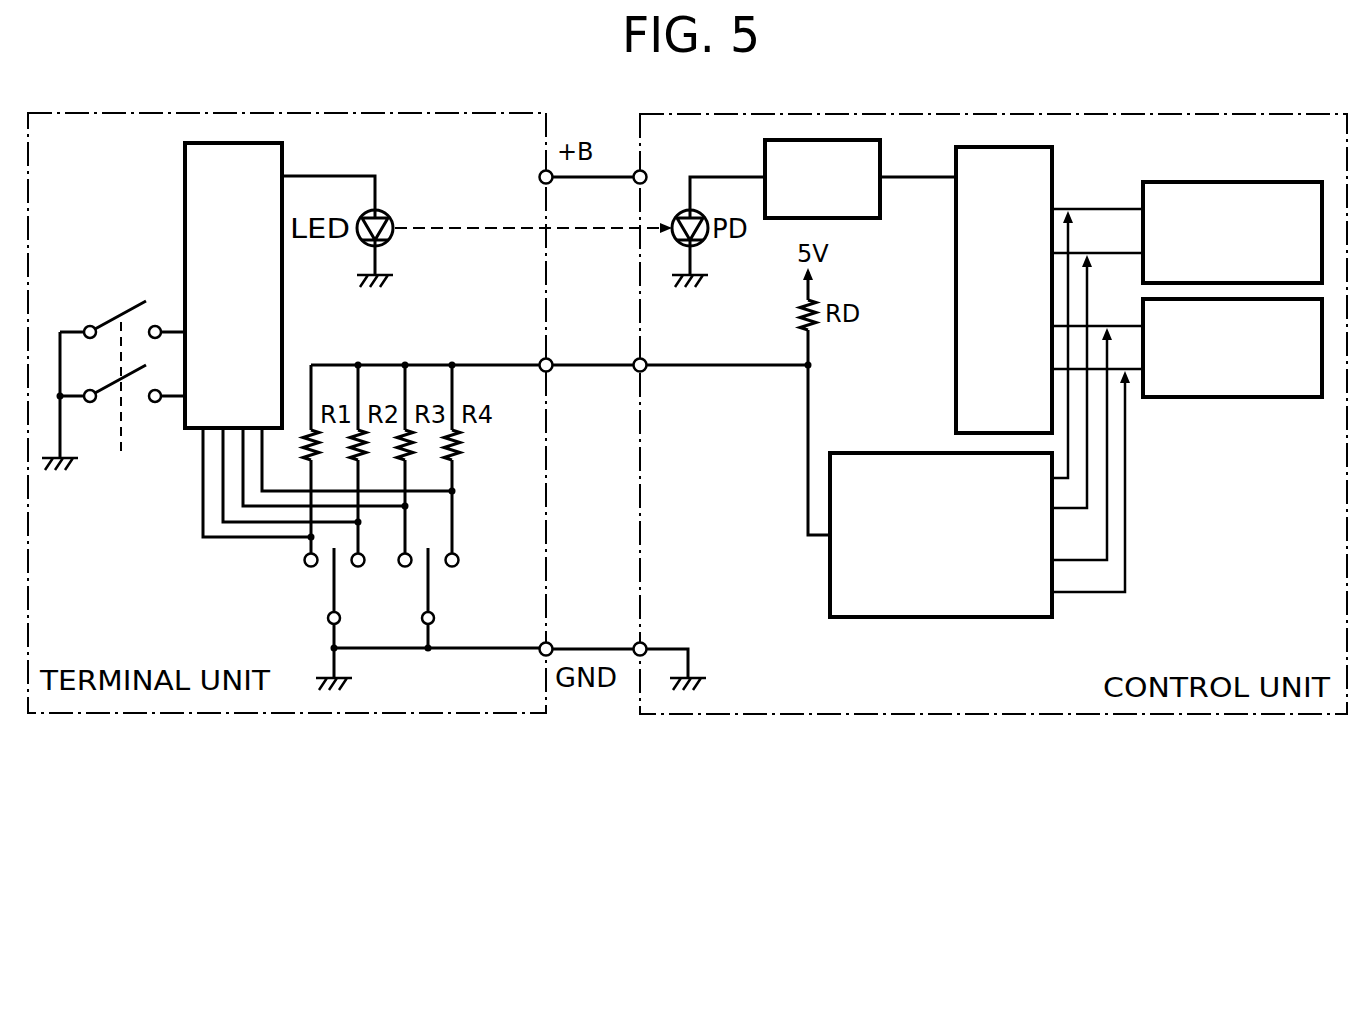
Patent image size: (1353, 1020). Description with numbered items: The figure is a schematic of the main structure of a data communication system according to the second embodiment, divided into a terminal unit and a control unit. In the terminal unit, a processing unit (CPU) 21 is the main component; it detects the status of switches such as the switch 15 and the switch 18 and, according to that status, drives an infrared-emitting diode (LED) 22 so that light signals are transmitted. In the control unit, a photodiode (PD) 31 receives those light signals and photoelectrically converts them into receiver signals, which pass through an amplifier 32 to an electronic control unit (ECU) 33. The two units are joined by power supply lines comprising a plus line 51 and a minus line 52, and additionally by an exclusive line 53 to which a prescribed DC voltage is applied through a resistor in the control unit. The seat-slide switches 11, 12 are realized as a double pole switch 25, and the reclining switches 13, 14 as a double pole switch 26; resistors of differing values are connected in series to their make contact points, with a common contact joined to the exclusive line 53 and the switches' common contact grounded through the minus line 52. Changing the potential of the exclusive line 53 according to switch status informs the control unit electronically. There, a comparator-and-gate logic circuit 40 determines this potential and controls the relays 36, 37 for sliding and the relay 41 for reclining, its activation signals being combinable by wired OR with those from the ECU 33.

The processing unit (CPU) 21 is at (185, 180).
The switch 15 is at (120, 325).
The switch 18 is at (120, 386).
The infrared-emitting diode (LED) 22 is at (386, 212).
The photodiode (PD) 31 is at (704, 244).
The amplifier 32 is at (862, 220).
The electronic control unit (ECU) 33 is at (956, 377).
The relay 36 is at (1232, 202).
The relay 37 is at (1180, 182).
The relay 41 is at (1258, 398).
The comparator-and-gate logic circuit 40 is at (985, 620).
The plus line 51 is at (607, 172).
The minus line 52 is at (601, 645).
The exclusive line 53 is at (602, 360).
The double pole switch 25 is at (245, 598).
The switch 11 is at (245, 598).
The switch 12 is at (328, 582).
The double pole switch 26 is at (481, 598).
The switch 13 is at (481, 598).
The switch 14 is at (440, 594).